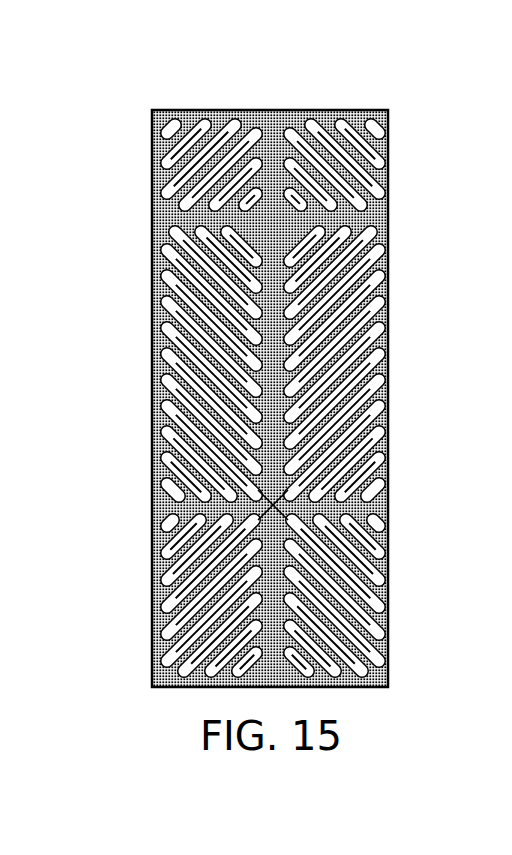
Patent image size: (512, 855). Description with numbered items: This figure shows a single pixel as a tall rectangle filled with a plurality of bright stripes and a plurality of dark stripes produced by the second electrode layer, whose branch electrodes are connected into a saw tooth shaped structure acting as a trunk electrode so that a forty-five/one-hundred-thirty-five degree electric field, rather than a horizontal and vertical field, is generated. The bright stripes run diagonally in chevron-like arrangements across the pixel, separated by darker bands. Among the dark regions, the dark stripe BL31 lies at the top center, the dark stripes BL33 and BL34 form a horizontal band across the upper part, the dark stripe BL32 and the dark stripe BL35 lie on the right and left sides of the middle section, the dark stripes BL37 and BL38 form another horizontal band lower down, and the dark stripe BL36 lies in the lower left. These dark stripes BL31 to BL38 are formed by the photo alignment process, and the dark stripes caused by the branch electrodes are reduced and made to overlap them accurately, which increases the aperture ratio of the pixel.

The dark stripe BL31 is at (272, 140).
The dark stripe BL32 is at (293, 327).
The dark stripe BL33 is at (160, 214).
The dark stripe BL34 is at (365, 229).
The dark stripe BL35 is at (208, 380).
The dark stripe BL36 is at (240, 605).
The dark stripe BL37 is at (158, 504).
The dark stripe BL38 is at (380, 510).